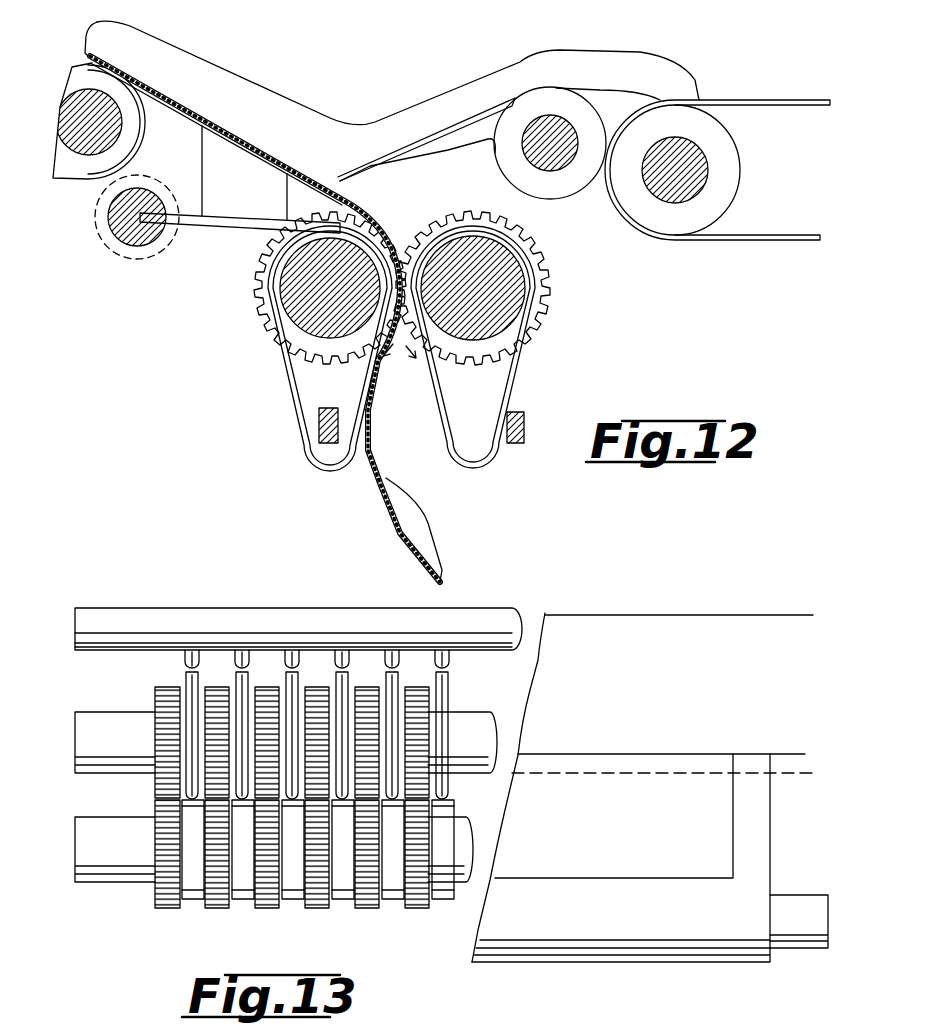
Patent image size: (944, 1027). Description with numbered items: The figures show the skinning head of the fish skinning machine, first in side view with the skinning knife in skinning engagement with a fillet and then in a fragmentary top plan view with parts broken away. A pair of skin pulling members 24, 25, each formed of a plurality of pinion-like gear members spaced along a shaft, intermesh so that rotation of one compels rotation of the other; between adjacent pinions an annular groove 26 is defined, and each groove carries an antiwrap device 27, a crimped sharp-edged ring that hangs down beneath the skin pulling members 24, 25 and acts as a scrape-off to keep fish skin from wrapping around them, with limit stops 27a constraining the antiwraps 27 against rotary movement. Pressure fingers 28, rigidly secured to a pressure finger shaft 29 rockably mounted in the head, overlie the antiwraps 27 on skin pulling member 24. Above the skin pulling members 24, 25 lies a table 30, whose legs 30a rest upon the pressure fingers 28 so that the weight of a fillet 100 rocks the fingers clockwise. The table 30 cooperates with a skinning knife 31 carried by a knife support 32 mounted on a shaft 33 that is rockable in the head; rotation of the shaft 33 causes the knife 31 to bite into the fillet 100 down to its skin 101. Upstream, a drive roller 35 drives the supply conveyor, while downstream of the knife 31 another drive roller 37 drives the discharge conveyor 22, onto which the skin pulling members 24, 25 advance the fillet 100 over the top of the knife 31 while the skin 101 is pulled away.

In FIG. 12, the discharge conveyor 22 is at (735, 100).
In FIG. 12, the skin pulling member 24 is at (302, 286).
In FIG. 13, the skin pulling member 24 is at (118, 722).
In FIG. 12, the skin pulling member 25 is at (506, 312).
In FIG. 13, the skin pulling member 25 is at (155, 902).
In FIG. 13, the annular groove 26 is at (196, 905).
In FIG. 12, the antiwrap device 27 is at (296, 392).
In FIG. 13, the antiwrap device 27 is at (300, 905).
In FIG. 12, the limit stop 27a is at (543, 425).
In FIG. 12, the pressure finger 28 is at (241, 222).
In FIG. 13, the pressure finger 28 is at (342, 652).
In FIG. 12, the pressure finger shaft 29 is at (117, 243).
In FIG. 13, the pressure finger shaft 29 is at (242, 604).
In FIG. 12, the table 30 is at (273, 153).
In FIG. 13, the table 30 is at (688, 704).
In FIG. 12, the leg 30a is at (268, 199).
In FIG. 12, the skinning knife 31 is at (424, 133).
In FIG. 13, the skinning knife 31 is at (620, 834).
In FIG. 12, the knife support 32 is at (446, 148).
In FIG. 13, the knife support 32 is at (636, 915).
In FIG. 13, the shaft 33 is at (814, 888).
In FIG. 12, the drive roller 35 is at (95, 122).
In FIG. 12, the drive roller 37 is at (690, 172).
In FIG. 12, the fillet 100 is at (600, 56).
In FIG. 12, the skin 101 is at (240, 116).